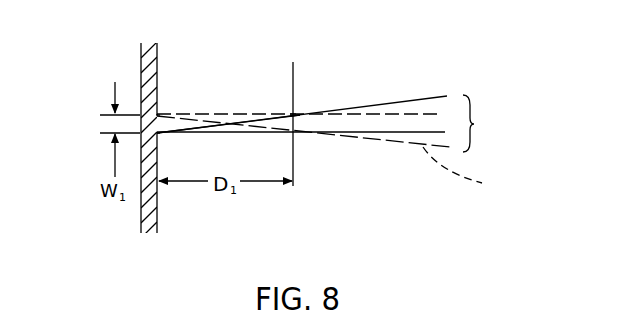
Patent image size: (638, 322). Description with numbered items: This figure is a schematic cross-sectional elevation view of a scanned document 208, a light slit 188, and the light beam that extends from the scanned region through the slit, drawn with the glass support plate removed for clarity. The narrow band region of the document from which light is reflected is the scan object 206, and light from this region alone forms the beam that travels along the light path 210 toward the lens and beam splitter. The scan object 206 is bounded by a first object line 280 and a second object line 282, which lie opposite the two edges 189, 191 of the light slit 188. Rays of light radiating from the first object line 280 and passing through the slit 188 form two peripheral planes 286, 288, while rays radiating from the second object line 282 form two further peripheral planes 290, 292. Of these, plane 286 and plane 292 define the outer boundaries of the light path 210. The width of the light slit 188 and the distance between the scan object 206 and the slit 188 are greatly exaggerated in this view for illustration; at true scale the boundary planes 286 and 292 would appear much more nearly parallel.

The document 208 is at (141, 67).
The object line 280 is at (157, 133).
The object line 282 is at (157, 115).
The scan object 206 is at (168, 128).
The edge of light slit 191 is at (293, 137).
The edge of light slit 189 is at (295, 113).
The light slit 188 is at (296, 121).
The peripheral plane 290 is at (383, 116).
The peripheral plane 286 is at (402, 101).
The peripheral plane 288 is at (410, 132).
The peripheral plane 292 is at (344, 158).
The light path 210 is at (472, 105).